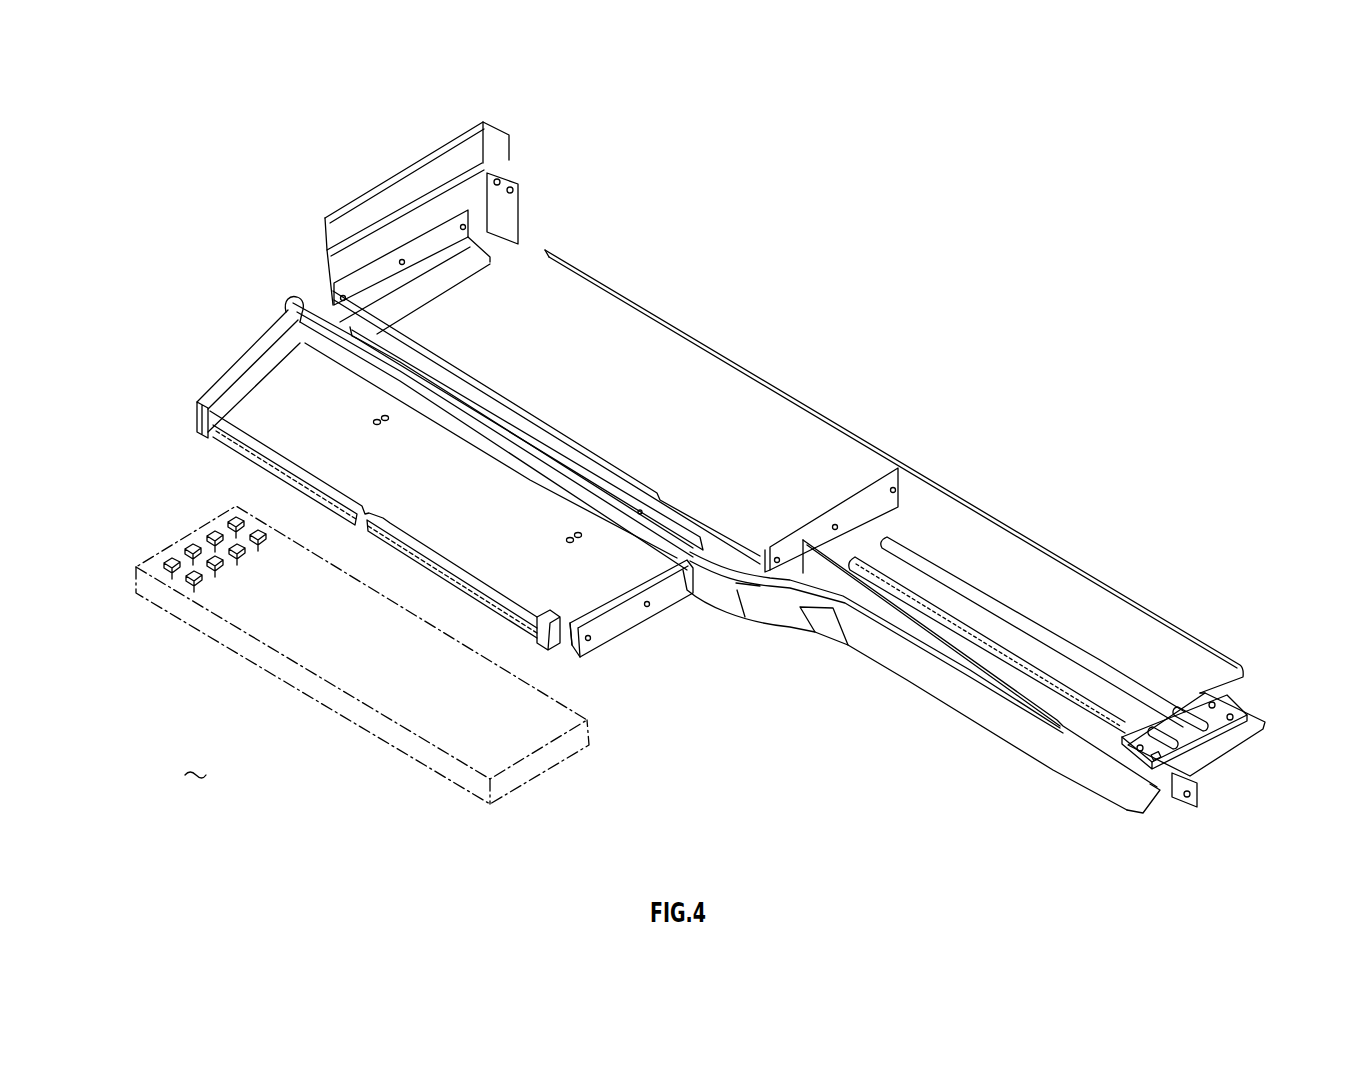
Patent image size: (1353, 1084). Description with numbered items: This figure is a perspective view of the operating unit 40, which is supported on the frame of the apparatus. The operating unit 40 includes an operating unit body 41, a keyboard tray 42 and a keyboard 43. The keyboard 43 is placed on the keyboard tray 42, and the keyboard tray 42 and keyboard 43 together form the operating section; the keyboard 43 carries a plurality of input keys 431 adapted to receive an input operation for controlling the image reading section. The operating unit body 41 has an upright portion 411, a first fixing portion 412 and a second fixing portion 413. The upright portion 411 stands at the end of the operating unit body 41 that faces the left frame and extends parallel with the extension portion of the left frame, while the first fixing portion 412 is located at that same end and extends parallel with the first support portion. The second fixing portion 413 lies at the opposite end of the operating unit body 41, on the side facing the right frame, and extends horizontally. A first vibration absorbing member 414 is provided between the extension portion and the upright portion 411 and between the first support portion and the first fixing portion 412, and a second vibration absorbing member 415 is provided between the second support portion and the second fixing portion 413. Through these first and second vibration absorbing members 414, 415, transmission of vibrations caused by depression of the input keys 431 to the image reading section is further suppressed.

The operating unit 40 is at (268, 158).
The operating unit body 41 is at (678, 362).
The upright portion 411 is at (345, 263).
The first fixing portion 412 is at (505, 210).
The second fixing portion 413 is at (1217, 728).
The first vibration absorbing member 414 is at (410, 170).
The second vibration absorbing member 415 is at (1255, 720).
The keyboard tray 42 is at (267, 412).
The keyboard 43 is at (185, 531).
The input keys 431 is at (168, 543).